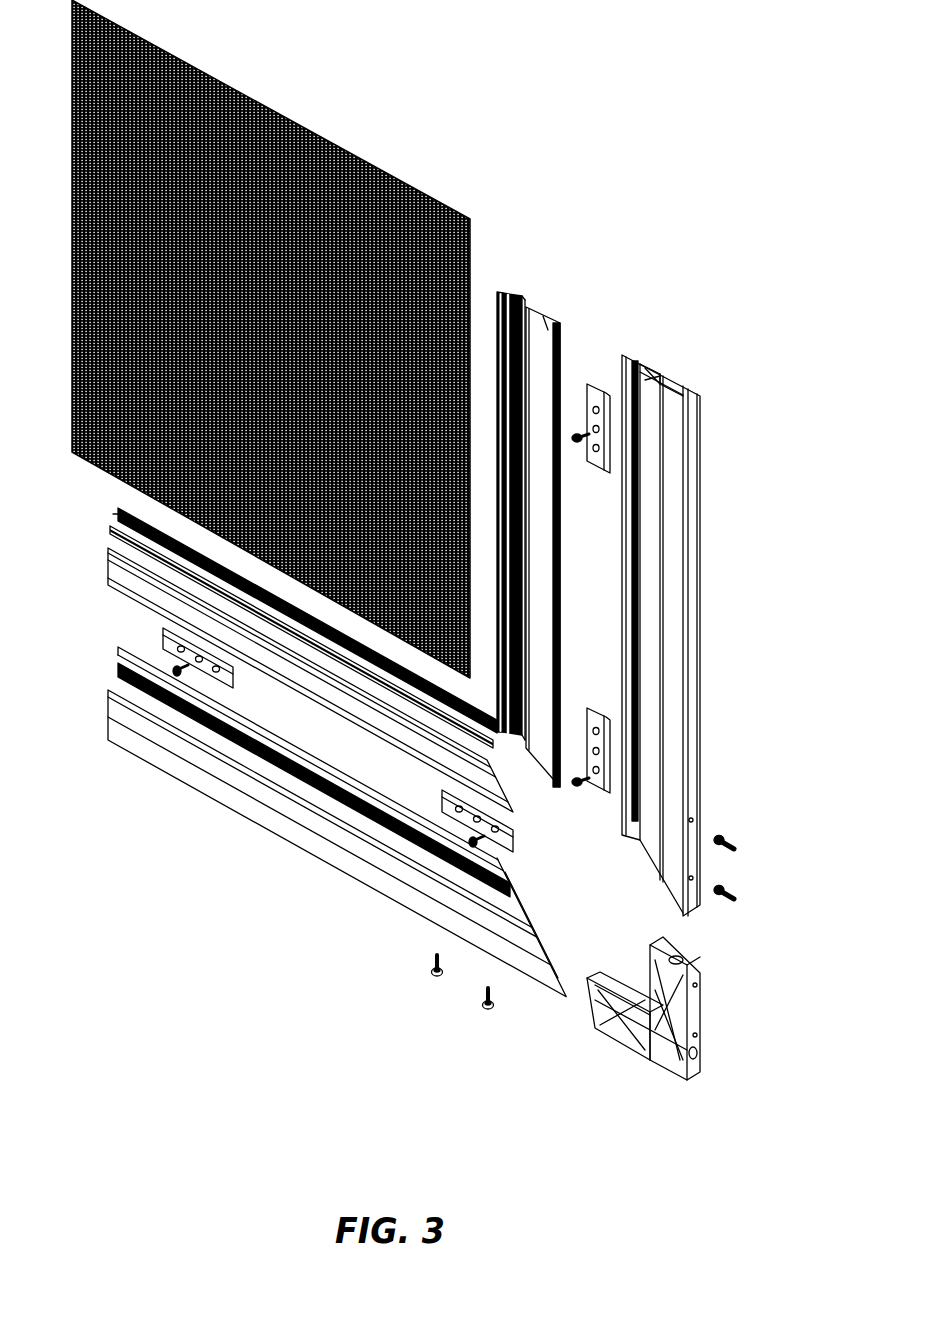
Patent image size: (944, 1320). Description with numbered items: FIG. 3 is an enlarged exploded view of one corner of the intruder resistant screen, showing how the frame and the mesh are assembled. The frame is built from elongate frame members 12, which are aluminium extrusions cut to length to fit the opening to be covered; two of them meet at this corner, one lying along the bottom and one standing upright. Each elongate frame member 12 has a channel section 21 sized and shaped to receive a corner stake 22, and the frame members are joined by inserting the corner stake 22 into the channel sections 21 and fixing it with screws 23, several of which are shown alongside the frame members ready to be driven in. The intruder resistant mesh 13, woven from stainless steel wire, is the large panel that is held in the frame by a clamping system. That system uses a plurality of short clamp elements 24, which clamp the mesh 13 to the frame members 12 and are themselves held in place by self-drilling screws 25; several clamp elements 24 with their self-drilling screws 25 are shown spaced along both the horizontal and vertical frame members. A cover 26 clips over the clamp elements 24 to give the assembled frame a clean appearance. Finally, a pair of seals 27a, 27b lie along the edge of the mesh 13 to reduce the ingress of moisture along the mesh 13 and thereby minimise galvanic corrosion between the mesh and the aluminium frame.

The elongate frame member 12 is at (700, 652).
The intruder resistant mesh 13 is at (268, 108).
The channel section 21 is at (560, 975).
The corner stake 22 is at (700, 1020).
The screw 23 is at (735, 849).
The clamp element 24 is at (608, 752).
The self-drilling screw 25 is at (580, 785).
The cover 26 is at (545, 328).
The seal 27a is at (514, 290).
The seal 27b is at (498, 290).